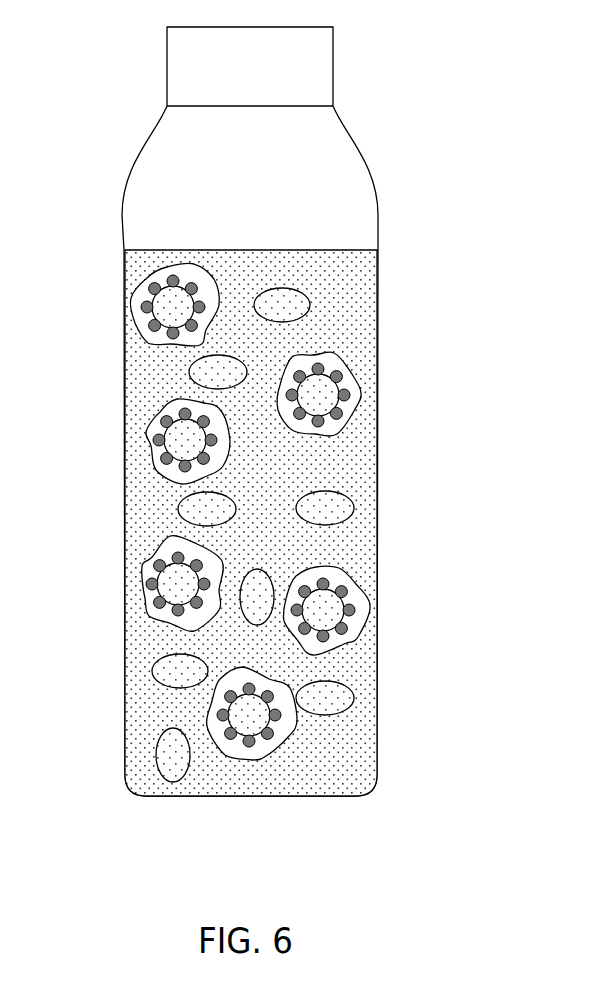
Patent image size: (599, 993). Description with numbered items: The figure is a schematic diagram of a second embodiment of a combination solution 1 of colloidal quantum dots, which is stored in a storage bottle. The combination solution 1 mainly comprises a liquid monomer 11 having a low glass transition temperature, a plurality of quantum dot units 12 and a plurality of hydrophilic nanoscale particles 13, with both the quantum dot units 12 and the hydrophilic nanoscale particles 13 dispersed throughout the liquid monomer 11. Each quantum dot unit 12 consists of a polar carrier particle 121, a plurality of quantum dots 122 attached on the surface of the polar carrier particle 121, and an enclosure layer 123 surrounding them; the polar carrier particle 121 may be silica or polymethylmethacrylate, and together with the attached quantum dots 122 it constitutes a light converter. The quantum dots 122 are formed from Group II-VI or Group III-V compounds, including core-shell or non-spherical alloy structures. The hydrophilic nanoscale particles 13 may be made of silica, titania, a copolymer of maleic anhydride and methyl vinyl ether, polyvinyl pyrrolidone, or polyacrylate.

The combination solution of colloidal quantum dots 1 is at (112, 250).
The liquid monomer 11 is at (365, 283).
The quantum dot unit 12 is at (386, 403).
The polar carrier particle 121 is at (320, 383).
The quantum dots 122 is at (342, 414).
The enclosure layer 123 is at (332, 432).
The hydrophilic nanoscale particle 13 is at (346, 519).